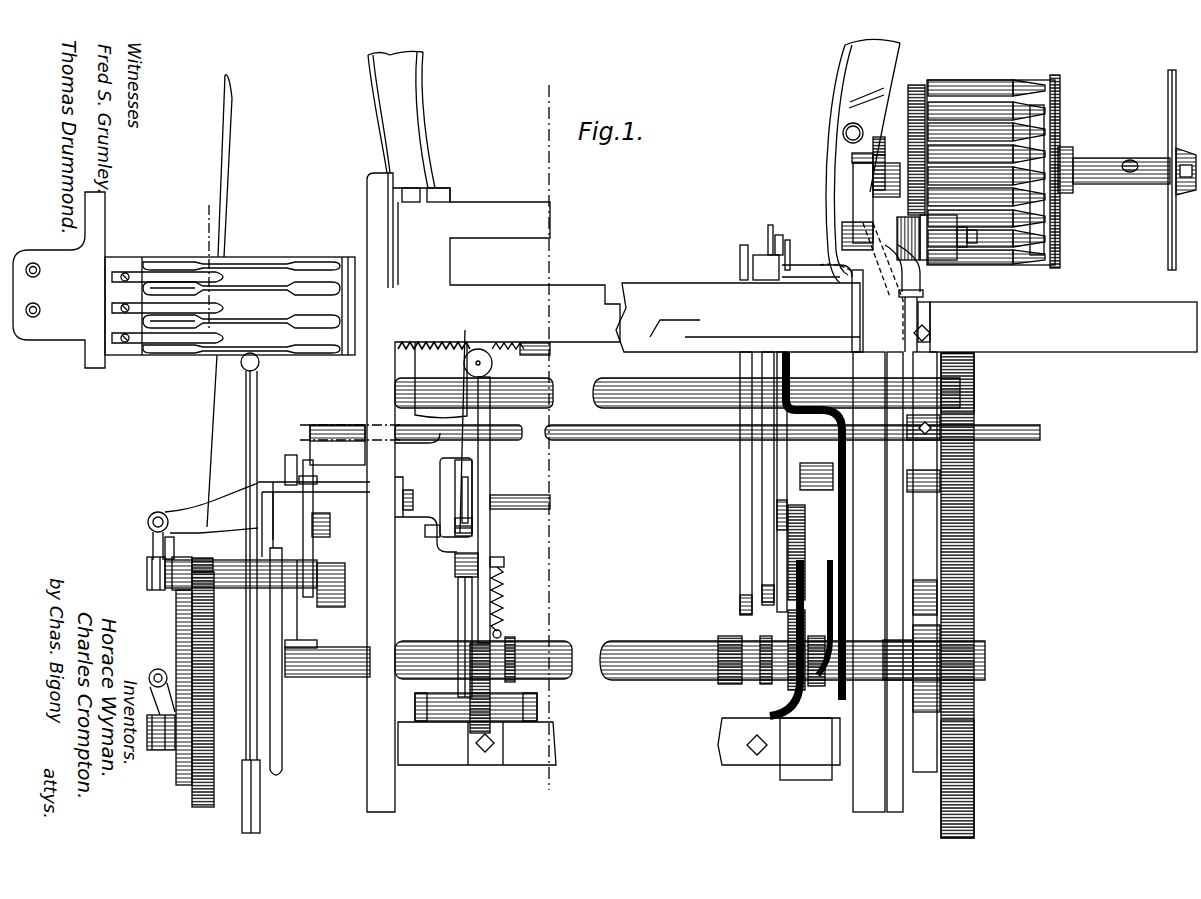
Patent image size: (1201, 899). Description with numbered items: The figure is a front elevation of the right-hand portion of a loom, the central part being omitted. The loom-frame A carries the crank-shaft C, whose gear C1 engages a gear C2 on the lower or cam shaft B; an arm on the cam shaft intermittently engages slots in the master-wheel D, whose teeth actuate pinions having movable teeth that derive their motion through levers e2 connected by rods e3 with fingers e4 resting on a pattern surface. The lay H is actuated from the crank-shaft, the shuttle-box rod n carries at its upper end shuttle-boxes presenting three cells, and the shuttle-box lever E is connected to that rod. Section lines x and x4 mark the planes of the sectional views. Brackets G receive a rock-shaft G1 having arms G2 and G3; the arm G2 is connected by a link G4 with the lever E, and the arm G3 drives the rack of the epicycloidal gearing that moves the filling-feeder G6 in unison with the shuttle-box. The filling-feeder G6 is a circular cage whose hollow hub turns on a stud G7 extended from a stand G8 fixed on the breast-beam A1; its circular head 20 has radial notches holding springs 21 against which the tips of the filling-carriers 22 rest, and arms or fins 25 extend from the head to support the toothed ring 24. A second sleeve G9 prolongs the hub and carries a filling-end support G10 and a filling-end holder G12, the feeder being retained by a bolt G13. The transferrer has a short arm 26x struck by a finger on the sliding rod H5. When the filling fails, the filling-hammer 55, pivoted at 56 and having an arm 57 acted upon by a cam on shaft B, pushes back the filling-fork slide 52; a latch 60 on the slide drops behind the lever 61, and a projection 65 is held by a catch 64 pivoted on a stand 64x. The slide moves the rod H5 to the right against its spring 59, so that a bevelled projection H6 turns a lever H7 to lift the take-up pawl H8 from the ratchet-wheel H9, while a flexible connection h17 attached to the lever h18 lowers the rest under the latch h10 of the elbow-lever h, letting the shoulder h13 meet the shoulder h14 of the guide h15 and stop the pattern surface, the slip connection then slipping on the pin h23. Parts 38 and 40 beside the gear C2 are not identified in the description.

The rod e3 is at (228, 301).
The section line x is at (204, 260).
The shuttle-box rod n is at (258, 458).
The lever e2 is at (160, 540).
The shuttle-box lever E is at (312, 575).
The crank-shaft C is at (196, 570).
The master-wheel D is at (178, 605).
The finger e4 is at (152, 705).
The arm G2 is at (305, 470).
The link G4 is at (284, 468).
The bracket G is at (345, 452).
The loom-frame A is at (392, 600).
The lay H is at (507, 212).
The spring 59 is at (430, 342).
The section line x4 is at (546, 433).
The rod h is at (460, 615).
The flexible connection h17 is at (462, 475).
The guide h15 is at (470, 490).
The latch h10 is at (472, 522).
The shoulder h14 is at (472, 534).
The shoulder h13 is at (440, 530).
The lever h18 is at (456, 578).
The pin h23 is at (466, 600).
The rock-shaft G1 is at (520, 440).
The cam shaft B is at (530, 648).
The breast-beam A1 is at (695, 336).
The sliding rod H5 is at (675, 319).
The pivot 56 is at (852, 305).
The lever 61 is at (742, 367).
The filling-hammer 55 is at (768, 432).
The arm 57 is at (766, 512).
The projection H6 is at (804, 381).
The lever H7 is at (848, 418).
The take-up pawl H8 is at (840, 552).
The ratchet-wheel H9 is at (845, 635).
The rod 38 is at (920, 530).
The arm G3 is at (945, 445).
The gear C2 is at (968, 560).
The gear C1 is at (960, 392).
The gear 40 is at (960, 610).
The stand G8 is at (855, 192).
The toothed ring 24 is at (914, 85).
The short arm 26x is at (925, 209).
The filling-feeder G6 is at (991, 161).
The arm 25 is at (985, 90).
The filling-carrier 22 is at (1045, 105).
The circular head 20 is at (1057, 182).
The spring 21 is at (1058, 268).
The sleeve G9 is at (1095, 165).
The stud G7 is at (1132, 160).
The filling-end support G10 is at (1168, 205).
The bolt G13 is at (1170, 230).
The filling-end holder G12 is at (1183, 150).
The latch 60 is at (741, 255).
The slide 52 is at (766, 267).
The catch 64 is at (770, 234).
The stand 64x is at (788, 237).
The projection 65 is at (817, 254).